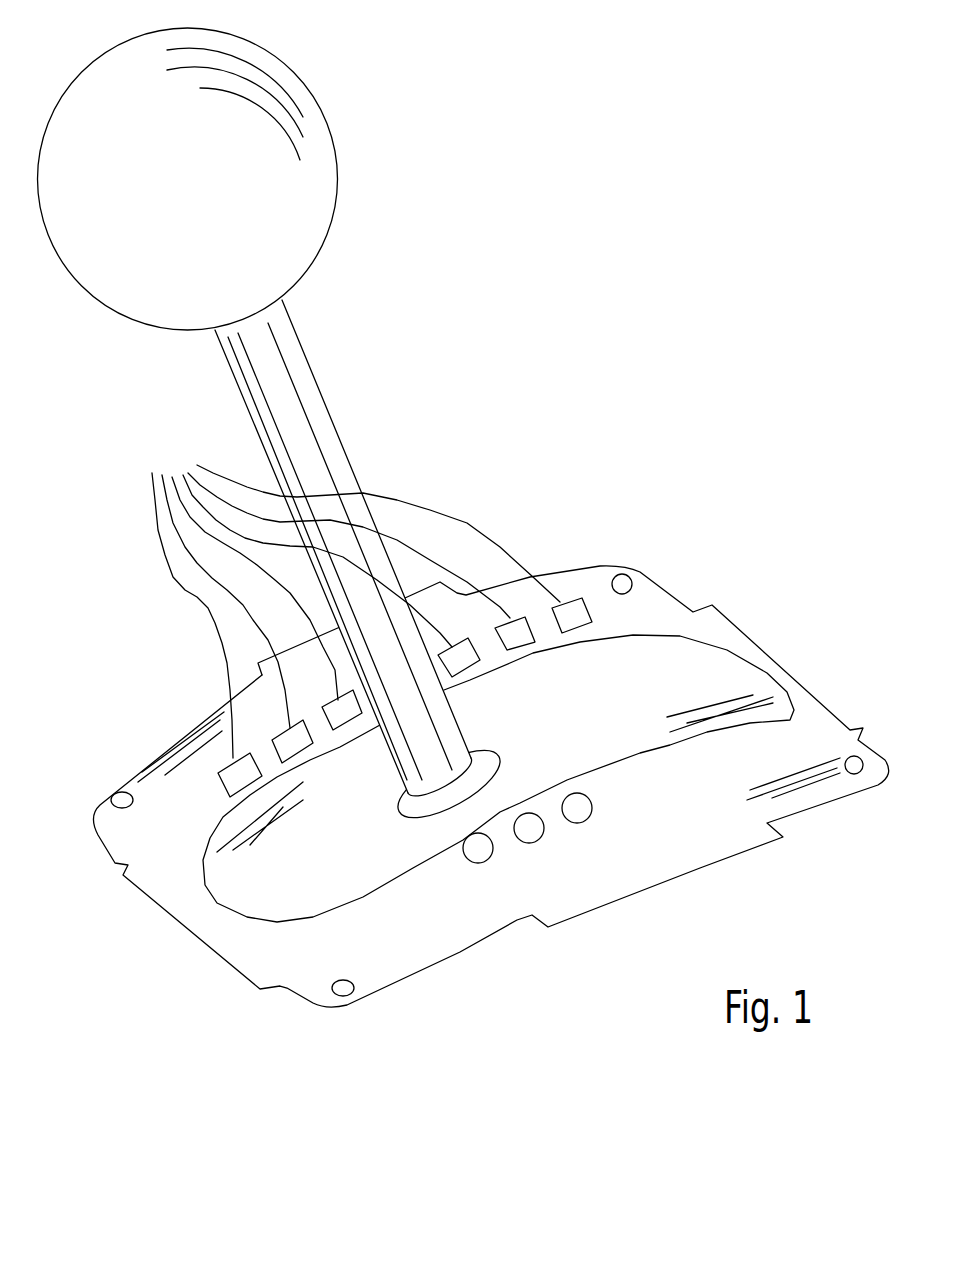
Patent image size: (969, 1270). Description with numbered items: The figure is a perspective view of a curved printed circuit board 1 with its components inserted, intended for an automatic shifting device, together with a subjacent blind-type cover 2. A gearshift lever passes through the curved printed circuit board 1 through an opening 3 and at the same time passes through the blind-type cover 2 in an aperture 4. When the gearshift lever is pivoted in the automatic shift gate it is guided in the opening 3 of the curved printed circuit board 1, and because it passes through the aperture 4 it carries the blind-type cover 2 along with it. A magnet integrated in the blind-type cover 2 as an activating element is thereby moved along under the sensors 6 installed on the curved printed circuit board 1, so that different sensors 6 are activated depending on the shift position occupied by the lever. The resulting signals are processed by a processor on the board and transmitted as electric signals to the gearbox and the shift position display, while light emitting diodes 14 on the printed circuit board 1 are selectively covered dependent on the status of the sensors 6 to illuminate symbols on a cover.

The curved printed circuit board 1 is at (490, 786).
The blind-type cover 2 is at (506, 732).
The opening 3 is at (783, 678).
The aperture 4 is at (274, 542).
The sensors 6 is at (372, 615).
The light emitting diodes 14 is at (535, 915).